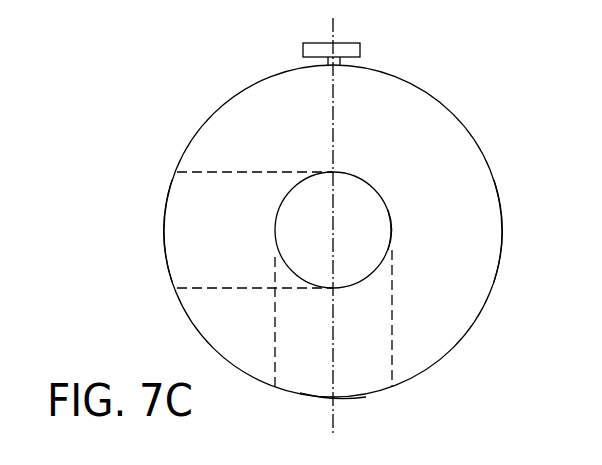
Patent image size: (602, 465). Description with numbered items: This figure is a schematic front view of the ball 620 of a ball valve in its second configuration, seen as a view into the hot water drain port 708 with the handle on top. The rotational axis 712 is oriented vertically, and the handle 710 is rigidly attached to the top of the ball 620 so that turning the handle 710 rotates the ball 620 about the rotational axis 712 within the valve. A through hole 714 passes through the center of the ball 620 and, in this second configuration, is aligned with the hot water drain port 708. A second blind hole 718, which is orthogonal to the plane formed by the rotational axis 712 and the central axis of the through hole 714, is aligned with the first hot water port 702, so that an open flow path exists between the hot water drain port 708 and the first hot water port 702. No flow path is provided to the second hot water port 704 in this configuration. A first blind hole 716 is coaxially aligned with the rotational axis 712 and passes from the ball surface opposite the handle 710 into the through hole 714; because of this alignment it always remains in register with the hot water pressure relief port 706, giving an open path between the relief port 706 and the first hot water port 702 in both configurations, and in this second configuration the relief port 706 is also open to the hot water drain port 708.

The ball 620 is at (455, 113).
The first hot water port 702 is at (164, 228).
The second hot water port 704 is at (503, 229).
The hot water pressure relief port 706 is at (366, 397).
The hot water drain port 708 is at (372, 198).
The handle 710 is at (360, 52).
The rotational axis 712 is at (333, 108).
The through hole 714 is at (378, 246).
The first blind hole 716 is at (378, 333).
The second blind hole 718 is at (180, 262).